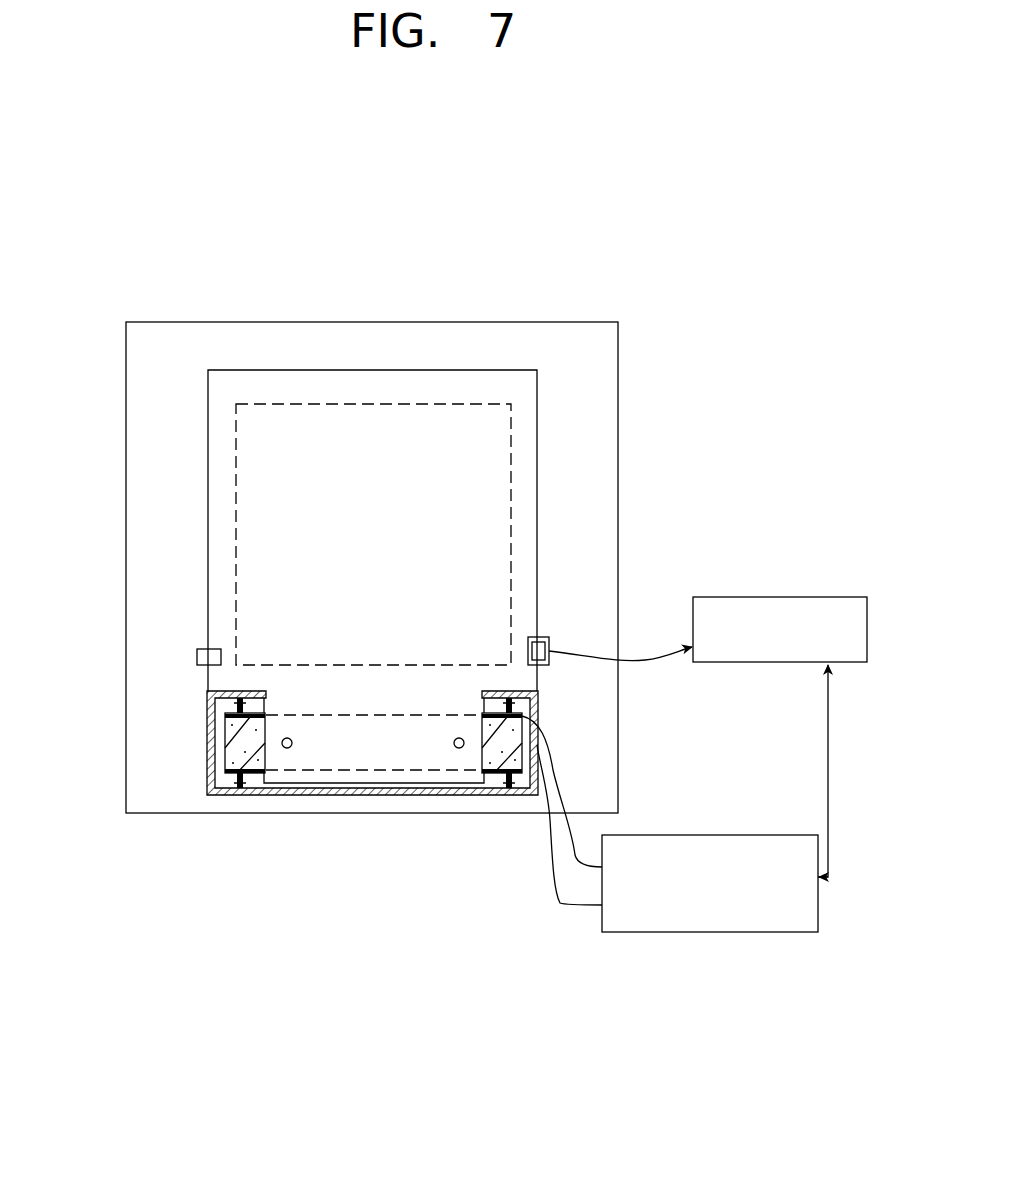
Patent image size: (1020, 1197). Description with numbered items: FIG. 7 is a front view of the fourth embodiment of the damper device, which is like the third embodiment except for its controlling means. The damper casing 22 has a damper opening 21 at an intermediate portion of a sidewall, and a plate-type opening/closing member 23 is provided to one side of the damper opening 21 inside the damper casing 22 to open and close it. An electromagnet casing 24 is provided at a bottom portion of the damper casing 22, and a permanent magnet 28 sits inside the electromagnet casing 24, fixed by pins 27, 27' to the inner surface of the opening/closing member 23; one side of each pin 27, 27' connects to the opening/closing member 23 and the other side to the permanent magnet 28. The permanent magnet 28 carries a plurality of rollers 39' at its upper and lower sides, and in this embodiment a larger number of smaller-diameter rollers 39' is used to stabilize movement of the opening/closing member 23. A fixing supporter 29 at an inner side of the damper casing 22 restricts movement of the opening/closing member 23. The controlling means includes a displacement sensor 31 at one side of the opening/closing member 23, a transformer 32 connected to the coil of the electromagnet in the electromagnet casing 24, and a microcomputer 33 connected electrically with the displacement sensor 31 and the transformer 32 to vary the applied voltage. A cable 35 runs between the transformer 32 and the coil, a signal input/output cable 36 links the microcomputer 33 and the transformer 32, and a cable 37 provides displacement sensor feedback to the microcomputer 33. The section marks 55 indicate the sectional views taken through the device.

The damper opening 21 is at (264, 407).
The damper casing 22 is at (524, 322).
The opening/closing member 23 is at (537, 404).
The electromagnet casing 24 is at (207, 777).
The pin 27 is at (282, 825).
The pin 27' is at (474, 820).
The permanent magnet 28 is at (228, 778).
The fixing supporter 29 is at (197, 658).
The displacement sensor 31 is at (542, 637).
The transformer 32 is at (688, 932).
The microcomputer 33 is at (808, 597).
The cable 35 is at (577, 905).
The signal input/output cable 36 is at (829, 818).
The cable for displacement sensor feed back 37 is at (645, 655).
The roller 39' is at (384, 786).
The section line 55 is at (318, 255).